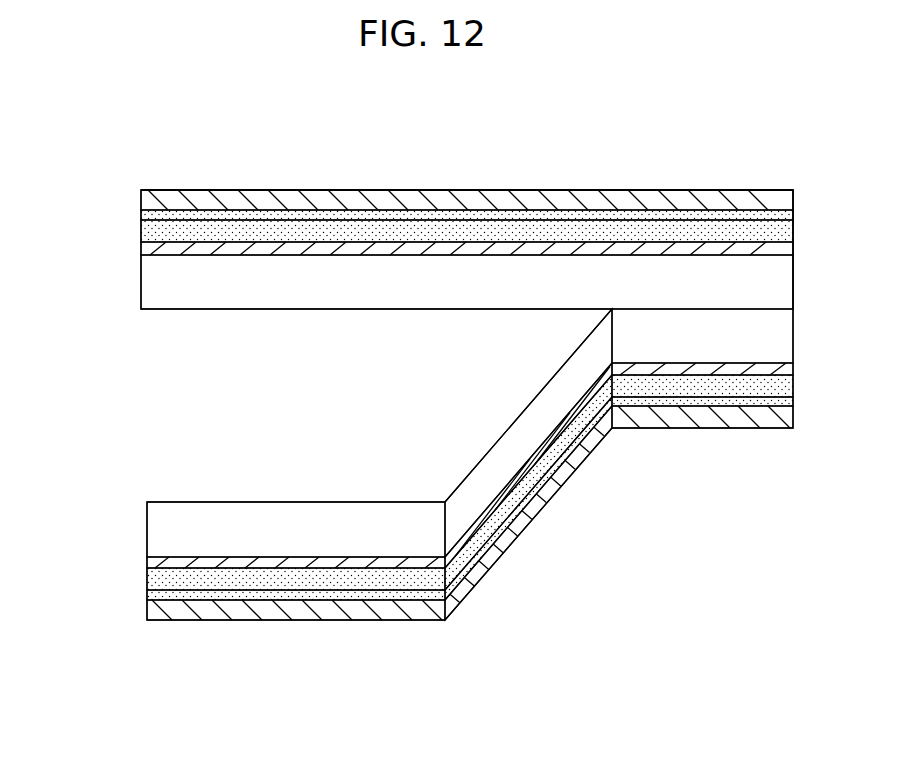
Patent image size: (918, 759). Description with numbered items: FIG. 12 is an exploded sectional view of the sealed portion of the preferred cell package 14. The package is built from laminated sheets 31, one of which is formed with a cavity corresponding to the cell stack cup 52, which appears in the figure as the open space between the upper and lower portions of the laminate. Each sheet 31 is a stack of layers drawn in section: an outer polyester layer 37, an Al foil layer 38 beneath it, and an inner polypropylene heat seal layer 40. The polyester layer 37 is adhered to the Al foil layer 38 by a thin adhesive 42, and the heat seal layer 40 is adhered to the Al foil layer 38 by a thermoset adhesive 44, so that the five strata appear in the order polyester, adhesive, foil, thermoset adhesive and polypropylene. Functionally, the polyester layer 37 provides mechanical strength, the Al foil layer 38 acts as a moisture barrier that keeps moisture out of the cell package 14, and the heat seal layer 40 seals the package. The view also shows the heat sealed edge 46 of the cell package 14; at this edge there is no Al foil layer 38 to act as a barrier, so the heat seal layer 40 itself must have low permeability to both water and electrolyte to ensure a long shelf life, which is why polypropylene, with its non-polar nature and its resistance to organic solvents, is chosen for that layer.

The cell package 14 is at (707, 513).
The sheets 31 is at (494, 190).
The polyester layer 37 is at (141, 198).
The Al foil layer 38 is at (141, 232).
The polypropylene heat seal layer 40 is at (141, 280).
The adhesive 42 is at (141, 214).
The thermoset adhesive 44 is at (141, 247).
The heat sealed edge 46 is at (672, 190).
The cell stack cup 52 is at (172, 444).